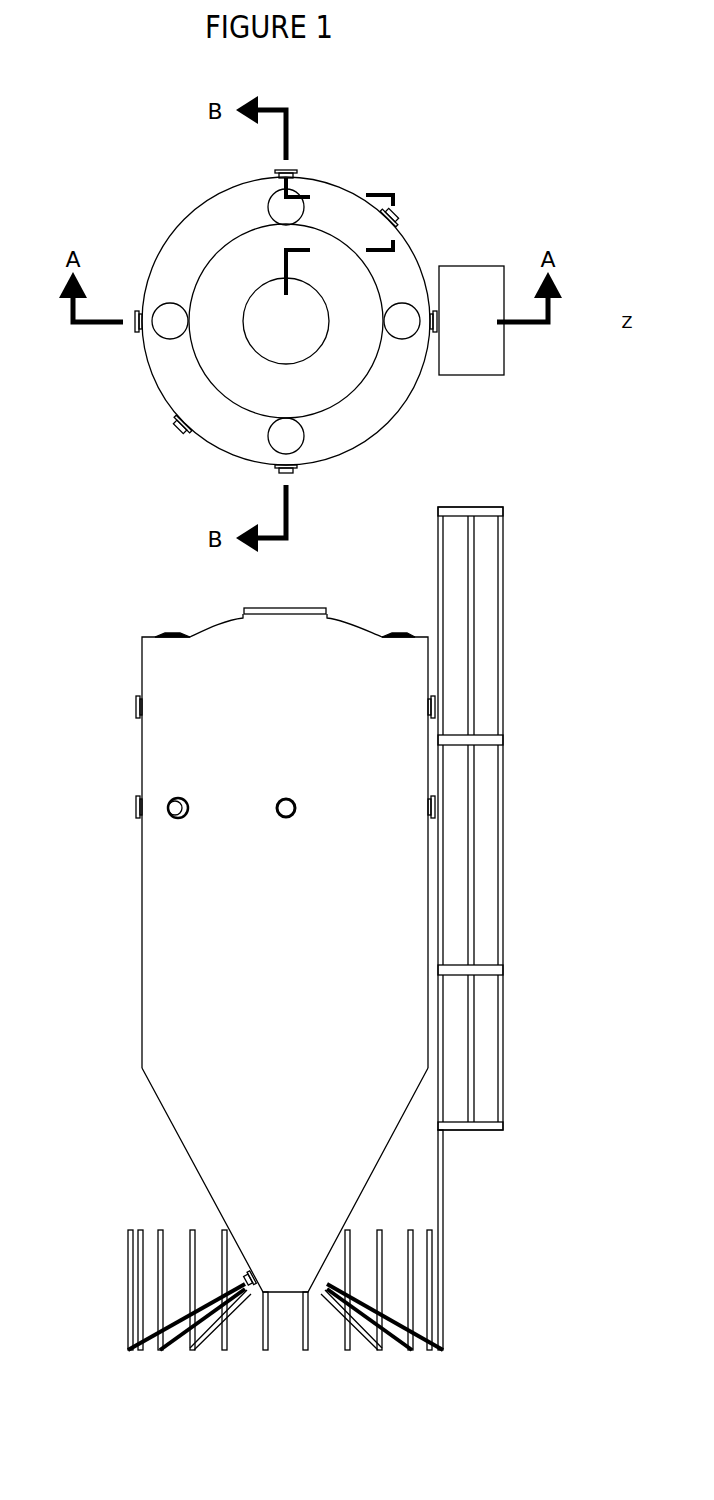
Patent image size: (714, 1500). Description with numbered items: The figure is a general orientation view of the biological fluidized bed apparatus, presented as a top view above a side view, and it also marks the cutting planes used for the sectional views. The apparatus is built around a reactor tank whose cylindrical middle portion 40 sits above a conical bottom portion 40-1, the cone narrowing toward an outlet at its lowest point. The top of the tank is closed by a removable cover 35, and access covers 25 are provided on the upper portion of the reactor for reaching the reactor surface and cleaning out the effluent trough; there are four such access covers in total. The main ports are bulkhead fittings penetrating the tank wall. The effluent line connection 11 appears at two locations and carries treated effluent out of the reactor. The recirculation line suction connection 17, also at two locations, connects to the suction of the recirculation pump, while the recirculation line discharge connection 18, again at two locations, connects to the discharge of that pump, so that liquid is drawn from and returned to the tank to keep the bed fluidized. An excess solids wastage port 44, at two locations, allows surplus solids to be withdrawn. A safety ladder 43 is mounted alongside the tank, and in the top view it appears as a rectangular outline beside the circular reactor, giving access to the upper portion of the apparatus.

The effluent line connection 11 is at (136, 707).
The recirculation line suction connection 17 is at (136, 807).
The recirculation line discharge connection 18 is at (297, 175).
The access covers 25 is at (172, 632).
The removable cover 35 is at (300, 608).
The reactor tank, cylindrical middle portion 40 is at (141, 1032).
The reactor tank, conical bottom portion 40-1 is at (173, 1128).
The safety ladder 43 is at (467, 376).
The excess solids wastage port 44 is at (396, 214).